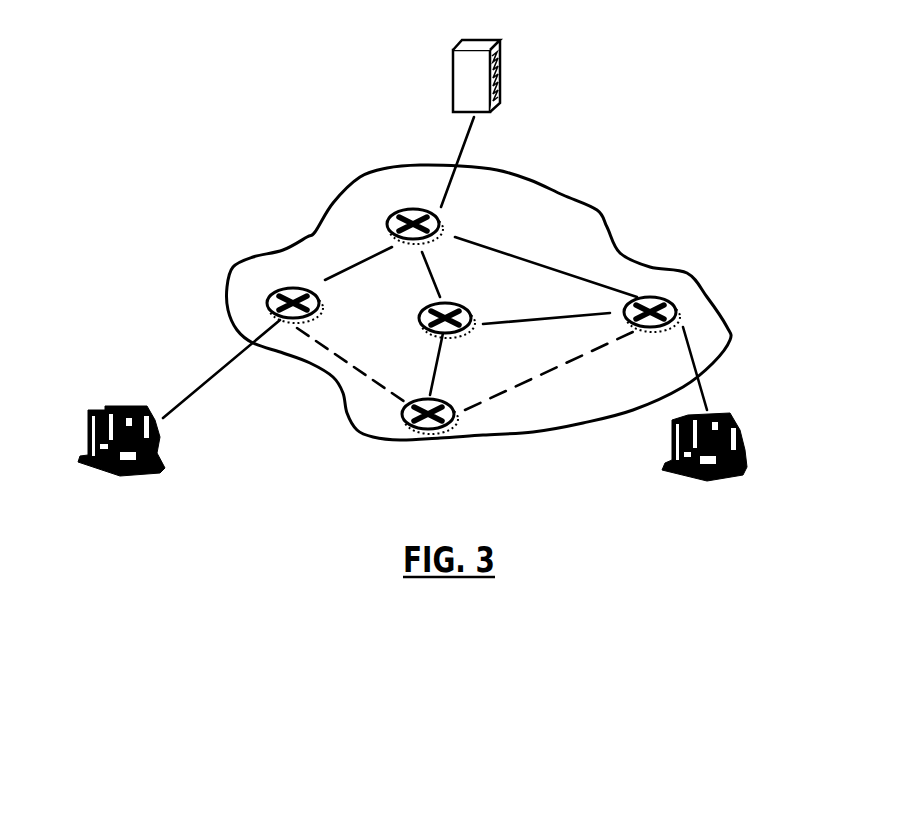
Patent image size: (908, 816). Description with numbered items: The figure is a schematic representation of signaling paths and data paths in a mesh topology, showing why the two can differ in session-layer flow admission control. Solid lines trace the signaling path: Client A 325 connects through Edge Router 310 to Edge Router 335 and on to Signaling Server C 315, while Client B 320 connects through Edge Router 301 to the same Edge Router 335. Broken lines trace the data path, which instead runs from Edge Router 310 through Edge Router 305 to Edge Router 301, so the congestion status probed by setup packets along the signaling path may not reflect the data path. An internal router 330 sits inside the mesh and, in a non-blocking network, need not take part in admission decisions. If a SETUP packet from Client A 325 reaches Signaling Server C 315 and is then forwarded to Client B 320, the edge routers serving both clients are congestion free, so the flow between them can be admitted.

The edge router 301 is at (679, 299).
The edge router 305 is at (463, 417).
The edge router 310 is at (247, 298).
The signaling server C 315 is at (605, 76).
The client B 320 is at (762, 446).
The client A 325 is at (101, 415).
The internal router 330 is at (422, 308).
The edge router 335 is at (457, 210).